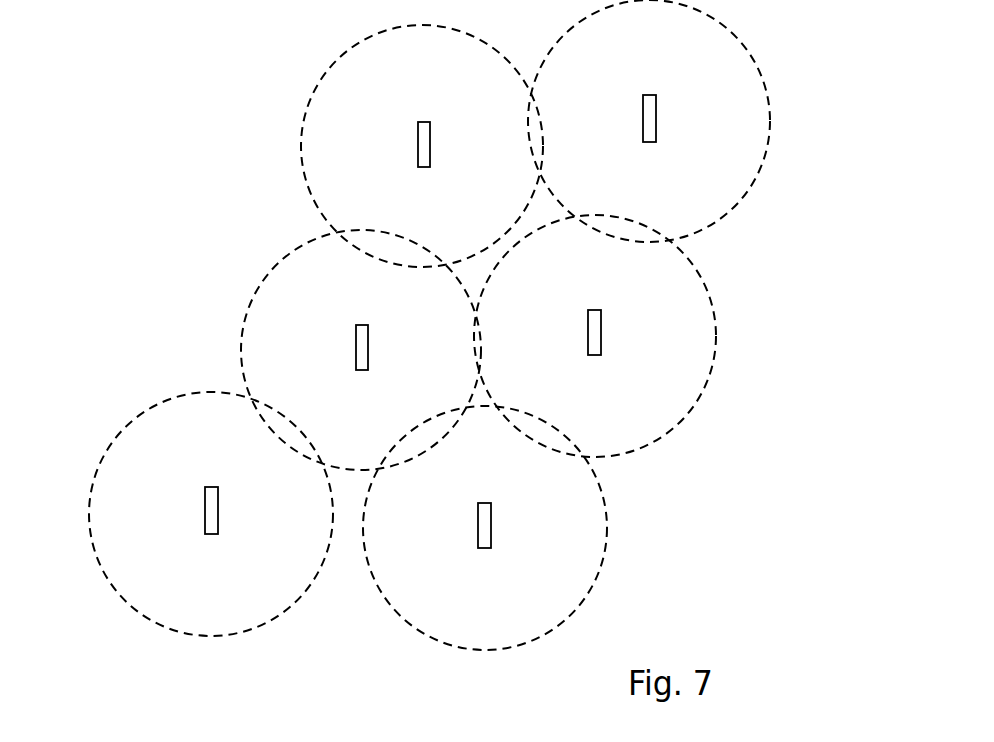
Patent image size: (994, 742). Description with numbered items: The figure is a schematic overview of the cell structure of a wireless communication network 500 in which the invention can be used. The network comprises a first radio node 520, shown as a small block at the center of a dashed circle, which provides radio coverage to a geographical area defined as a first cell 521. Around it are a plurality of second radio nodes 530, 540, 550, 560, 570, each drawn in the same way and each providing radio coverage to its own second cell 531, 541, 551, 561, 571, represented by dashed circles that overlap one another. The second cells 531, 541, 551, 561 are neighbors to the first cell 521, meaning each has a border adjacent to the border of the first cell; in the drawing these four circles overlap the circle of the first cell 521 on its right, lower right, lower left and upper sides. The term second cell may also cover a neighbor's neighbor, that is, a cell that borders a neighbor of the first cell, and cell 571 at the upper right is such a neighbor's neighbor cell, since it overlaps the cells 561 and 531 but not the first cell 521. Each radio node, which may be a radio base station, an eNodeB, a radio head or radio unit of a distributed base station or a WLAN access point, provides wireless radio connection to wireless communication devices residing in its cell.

The wireless communication network 500 is at (162, 101).
The first radio node 520 is at (356, 355).
The first cell 521 is at (241, 334).
The second radio node 530 is at (588, 340).
The second cell 531 is at (717, 322).
The second radio node 540 is at (478, 535).
The second cell 541 is at (607, 514).
The second radio node 550 is at (205, 517).
The second cell 551 is at (90, 497).
The second radio node 560 is at (418, 153).
The second cell 561 is at (302, 130).
The second radio node 570 is at (643, 127).
The second cell 571 is at (771, 108).